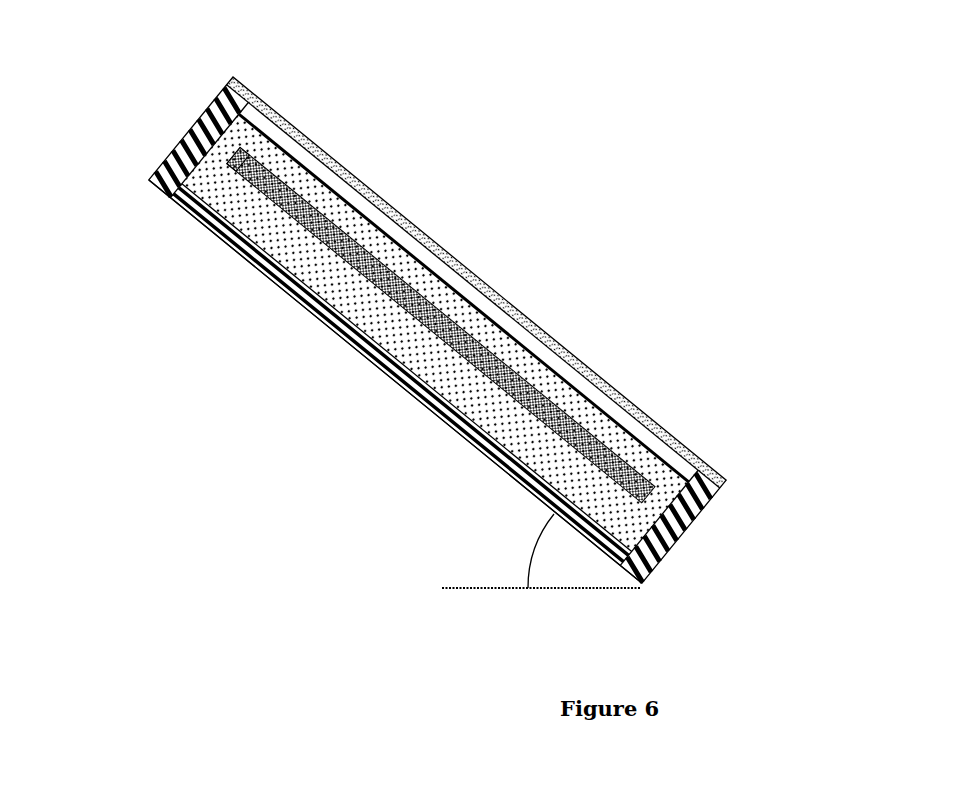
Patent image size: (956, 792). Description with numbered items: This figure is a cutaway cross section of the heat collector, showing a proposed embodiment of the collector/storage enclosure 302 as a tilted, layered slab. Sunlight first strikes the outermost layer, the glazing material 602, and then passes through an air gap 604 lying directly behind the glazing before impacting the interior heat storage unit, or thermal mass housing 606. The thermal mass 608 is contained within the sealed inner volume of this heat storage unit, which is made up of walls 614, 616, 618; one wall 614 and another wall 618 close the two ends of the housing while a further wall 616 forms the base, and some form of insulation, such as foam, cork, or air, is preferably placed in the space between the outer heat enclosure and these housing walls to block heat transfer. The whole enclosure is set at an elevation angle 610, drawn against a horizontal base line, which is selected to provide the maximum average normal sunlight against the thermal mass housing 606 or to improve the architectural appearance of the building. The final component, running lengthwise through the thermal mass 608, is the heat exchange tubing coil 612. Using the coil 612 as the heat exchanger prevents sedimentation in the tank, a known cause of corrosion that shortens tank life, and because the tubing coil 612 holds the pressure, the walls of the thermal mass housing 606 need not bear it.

The collector/storage enclosure 302 is at (586, 203).
The glazing material 602 is at (285, 113).
The air gap 604 is at (537, 337).
The thermal mass housing 606 is at (462, 295).
The thermal mass 608 is at (657, 468).
The elevation angle 610 is at (527, 549).
The heat exchange tubing coil 612 is at (232, 162).
The wall 614 is at (197, 133).
The wall 616 is at (397, 386).
The wall 618 is at (680, 545).